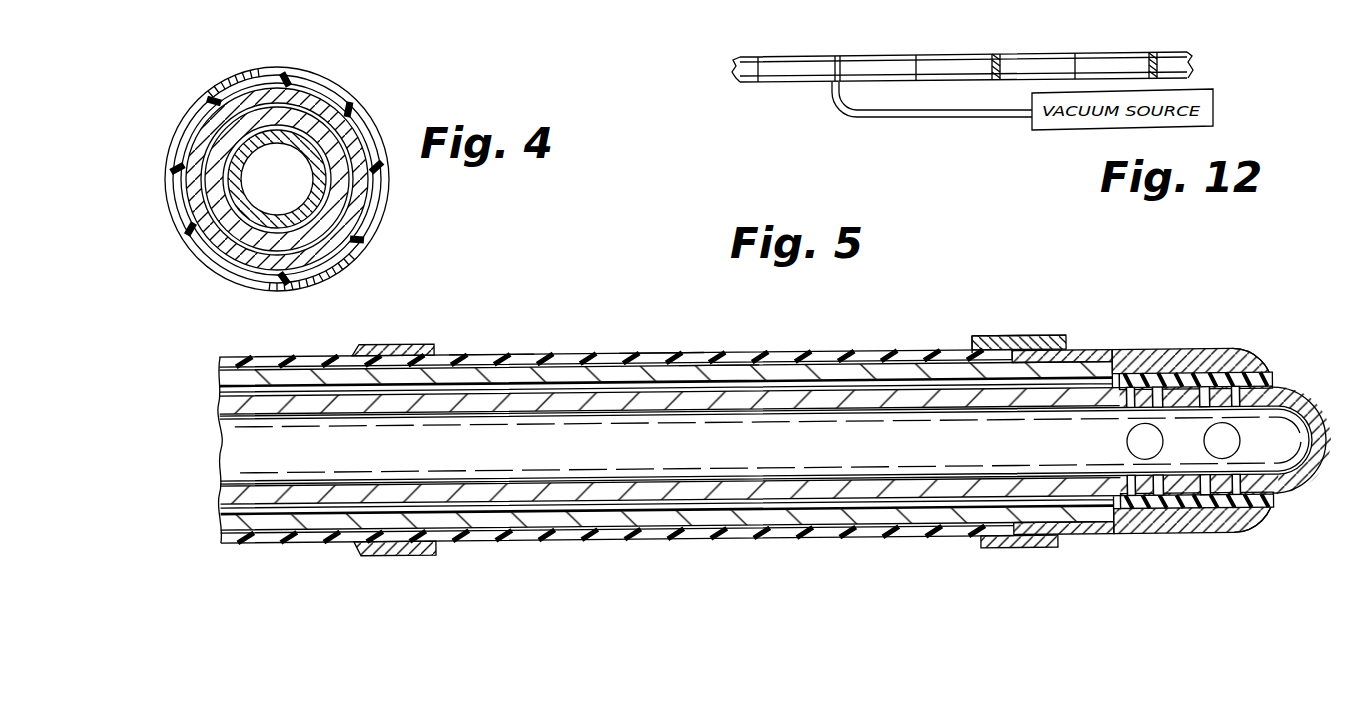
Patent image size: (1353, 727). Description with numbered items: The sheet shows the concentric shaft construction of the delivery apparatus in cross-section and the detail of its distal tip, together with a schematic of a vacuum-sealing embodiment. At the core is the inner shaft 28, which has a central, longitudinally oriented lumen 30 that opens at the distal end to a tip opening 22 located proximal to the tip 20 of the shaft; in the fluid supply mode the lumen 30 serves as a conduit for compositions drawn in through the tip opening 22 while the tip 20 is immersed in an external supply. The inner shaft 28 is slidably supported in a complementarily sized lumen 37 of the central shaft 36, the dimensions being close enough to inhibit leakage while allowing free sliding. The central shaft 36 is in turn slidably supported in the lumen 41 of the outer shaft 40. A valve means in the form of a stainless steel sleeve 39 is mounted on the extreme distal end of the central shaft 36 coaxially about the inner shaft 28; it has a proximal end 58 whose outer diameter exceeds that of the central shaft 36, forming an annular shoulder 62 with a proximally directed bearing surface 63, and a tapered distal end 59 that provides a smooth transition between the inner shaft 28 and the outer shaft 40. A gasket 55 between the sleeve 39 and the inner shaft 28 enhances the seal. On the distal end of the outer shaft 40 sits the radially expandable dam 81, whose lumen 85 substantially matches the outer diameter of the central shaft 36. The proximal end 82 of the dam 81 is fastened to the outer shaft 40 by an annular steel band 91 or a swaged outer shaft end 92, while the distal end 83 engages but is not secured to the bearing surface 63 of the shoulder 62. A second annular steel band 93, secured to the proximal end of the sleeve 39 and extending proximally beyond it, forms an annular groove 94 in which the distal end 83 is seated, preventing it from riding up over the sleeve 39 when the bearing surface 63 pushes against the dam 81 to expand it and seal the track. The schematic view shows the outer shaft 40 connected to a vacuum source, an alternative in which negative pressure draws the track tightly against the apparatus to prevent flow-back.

In FIG. 5, the tip 20 is at (1333, 440).
In FIG. 5, the tip opening 22 is at (1213, 405).
In FIG. 4, the inner shaft 28 is at (315, 147).
In FIG. 5, the inner shaft 28 is at (217, 488).
In FIG. 4, the lumen 30 is at (266, 172).
In FIG. 5, the lumen 30 is at (248, 452).
In FIG. 4, the central shaft 36 is at (305, 110).
In FIG. 5, the central shaft 36 is at (217, 375).
In FIG. 4, the lumen 37 is at (247, 128).
In FIG. 5, the lumen 37 is at (217, 507).
In FIG. 5, the sleeve 39 is at (1148, 350).
In FIG. 4, the outer shaft 40 is at (200, 118).
In FIG. 12, the outer shaft 40 is at (1092, 45).
In FIG. 5, the outer shaft 40 is at (225, 545).
In FIG. 4, the lumen 41 is at (190, 173).
In FIG. 5, the lumen 41 is at (217, 530).
In FIG. 5, the gasket 55 is at (1255, 372).
In FIG. 5, the proximal end 58 is at (1084, 350).
In FIG. 5, the distal end 59 is at (1235, 350).
In FIG. 5, the annular shoulder 62 is at (1012, 355).
In FIG. 5, the bearing surface 63 is at (997, 350).
In FIG. 5, the radially expandable dam 81 is at (662, 358).
In FIG. 5, the proximal end 82 is at (490, 356).
In FIG. 5, the distal end 83 is at (941, 350).
In FIG. 5, the lumen 85 is at (712, 372).
In FIG. 5, the annular steel band 91 is at (395, 343).
In FIG. 5, the swaged outer shaft end 92 is at (220, 357).
In FIG. 5, the annular steel band 93 is at (978, 548).
In FIG. 5, the annular groove 94 is at (979, 350).